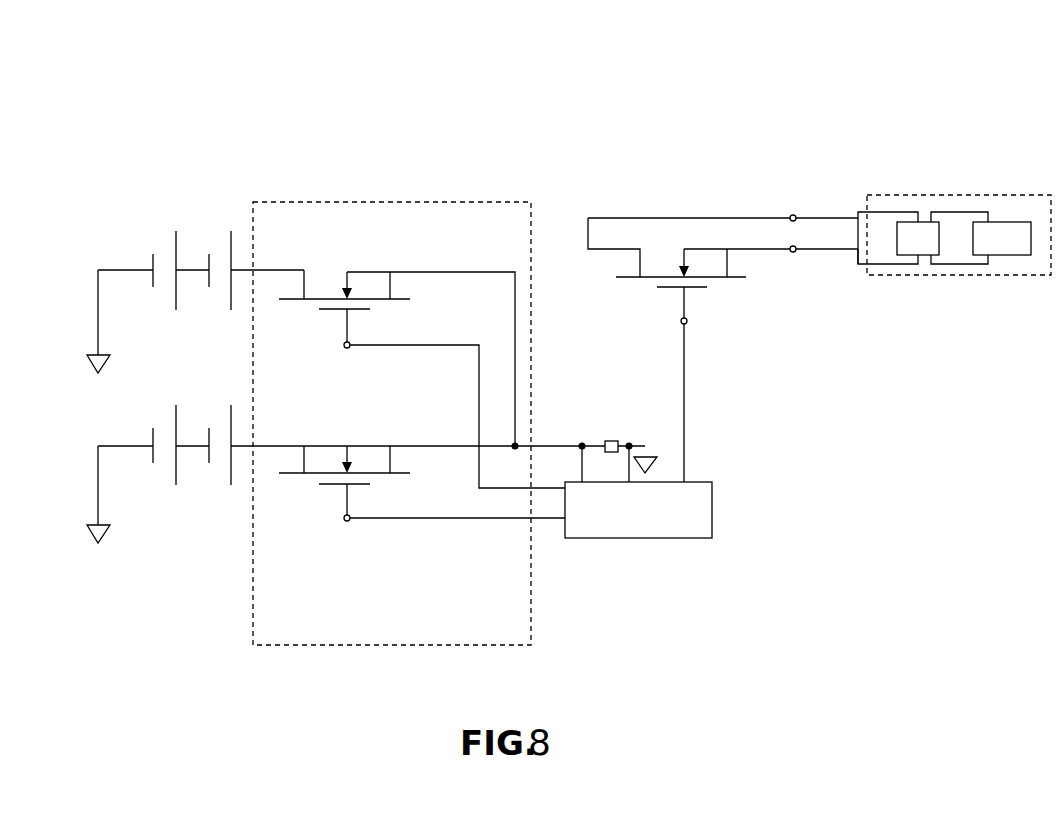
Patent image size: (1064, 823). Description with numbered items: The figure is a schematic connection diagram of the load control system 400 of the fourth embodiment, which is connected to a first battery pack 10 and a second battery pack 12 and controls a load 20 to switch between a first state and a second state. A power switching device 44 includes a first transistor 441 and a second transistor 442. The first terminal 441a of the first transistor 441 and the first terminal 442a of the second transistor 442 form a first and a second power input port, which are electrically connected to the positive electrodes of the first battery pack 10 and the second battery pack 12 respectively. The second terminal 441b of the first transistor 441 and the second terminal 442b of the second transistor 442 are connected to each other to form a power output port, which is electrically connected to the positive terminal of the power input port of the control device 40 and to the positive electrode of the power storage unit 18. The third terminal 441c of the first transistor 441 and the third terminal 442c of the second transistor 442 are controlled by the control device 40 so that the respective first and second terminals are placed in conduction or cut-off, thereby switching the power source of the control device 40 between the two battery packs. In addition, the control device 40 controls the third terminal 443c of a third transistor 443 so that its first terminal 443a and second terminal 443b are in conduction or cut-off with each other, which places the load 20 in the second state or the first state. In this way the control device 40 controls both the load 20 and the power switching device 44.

The load control system 400 is at (727, 131).
The first battery pack 10 is at (195, 255).
The second battery pack 12 is at (195, 516).
The power storage unit 18 is at (611, 441).
The load 20 is at (960, 193).
The control device 40 is at (699, 480).
The power switching device 44 is at (436, 199).
The first transistor 441 is at (388, 310).
The first terminal of the first transistor 441a is at (304, 270).
The second terminal of the first transistor 441b is at (392, 272).
The third terminal of the first transistor 441c is at (344, 345).
The second transistor 442 is at (323, 508).
The first terminal of the second transistor 442a is at (304, 446).
The second terminal of the second transistor 442b is at (390, 446).
The third terminal of the second transistor 442c is at (349, 521).
The third transistor 443 is at (723, 290).
The first terminal of the third transistor 443a is at (635, 249).
The second terminal of the third transistor 443b is at (727, 250).
The third terminal of the third transistor 443c is at (686, 324).